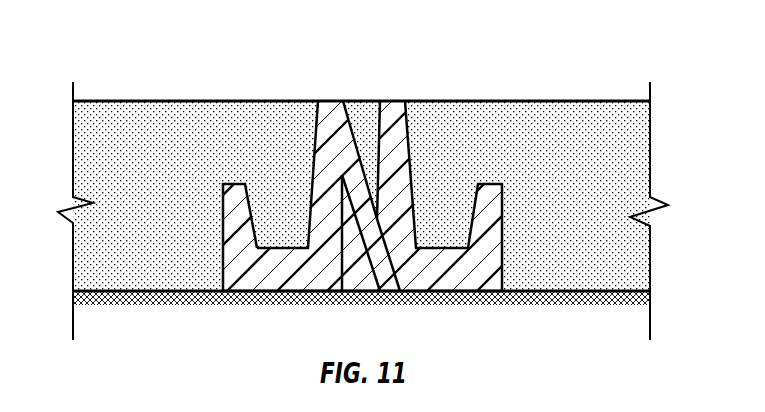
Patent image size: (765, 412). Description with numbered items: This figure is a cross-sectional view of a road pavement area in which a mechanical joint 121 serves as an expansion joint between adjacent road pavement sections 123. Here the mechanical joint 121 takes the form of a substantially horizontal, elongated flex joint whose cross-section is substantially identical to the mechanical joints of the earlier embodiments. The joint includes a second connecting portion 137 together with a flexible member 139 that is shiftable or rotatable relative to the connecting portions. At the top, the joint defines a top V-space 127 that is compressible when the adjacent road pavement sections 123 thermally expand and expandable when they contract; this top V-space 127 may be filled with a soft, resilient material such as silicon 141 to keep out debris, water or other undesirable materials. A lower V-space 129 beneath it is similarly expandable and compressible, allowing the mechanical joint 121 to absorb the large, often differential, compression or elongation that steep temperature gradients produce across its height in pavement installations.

The mechanical joint 121 is at (252, 319).
The road pavement sections 123 is at (363, 203).
The top V-space 127 is at (377, 86).
The lower V-space 129 is at (409, 224).
The second connecting portion 137 is at (362, 221).
The flexible member 139 is at (399, 260).
The silicon 141 is at (339, 142).